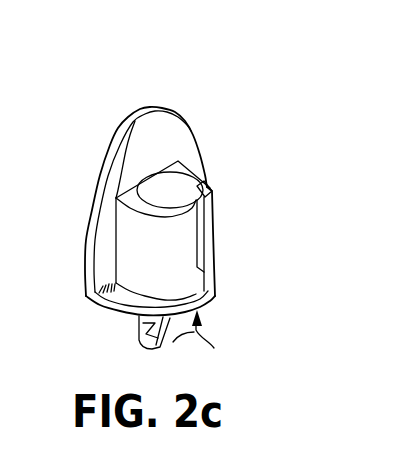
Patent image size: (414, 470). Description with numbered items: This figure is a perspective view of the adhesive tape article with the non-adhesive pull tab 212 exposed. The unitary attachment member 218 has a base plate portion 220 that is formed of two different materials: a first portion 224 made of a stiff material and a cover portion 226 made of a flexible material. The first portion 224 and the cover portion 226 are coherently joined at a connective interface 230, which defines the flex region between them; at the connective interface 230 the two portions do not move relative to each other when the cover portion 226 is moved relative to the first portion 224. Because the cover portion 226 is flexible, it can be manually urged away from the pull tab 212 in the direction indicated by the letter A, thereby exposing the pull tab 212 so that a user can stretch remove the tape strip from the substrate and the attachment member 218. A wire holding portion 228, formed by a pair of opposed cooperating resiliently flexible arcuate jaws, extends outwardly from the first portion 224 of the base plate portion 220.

The unitary attachment member 218 is at (122, 111).
The base plate portion 220 is at (96, 167).
The first portion 224 is at (167, 122).
The cover portion 226 is at (212, 298).
The wire holding portion 228 is at (213, 192).
The connective interface 230 is at (93, 301).
The non-adhesive pull tab 212 is at (143, 346).
The arrow A is at (203, 337).